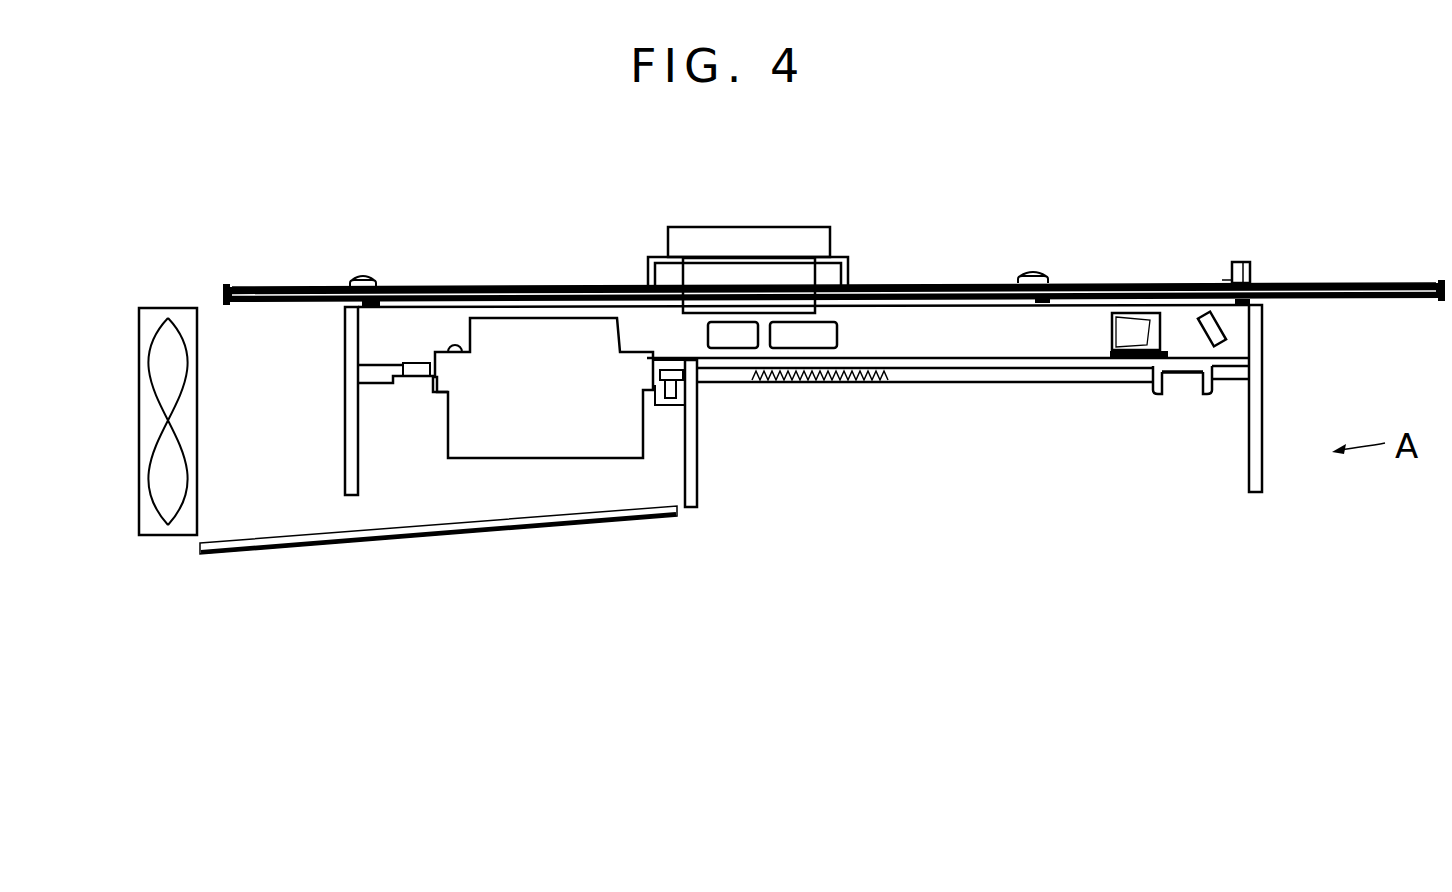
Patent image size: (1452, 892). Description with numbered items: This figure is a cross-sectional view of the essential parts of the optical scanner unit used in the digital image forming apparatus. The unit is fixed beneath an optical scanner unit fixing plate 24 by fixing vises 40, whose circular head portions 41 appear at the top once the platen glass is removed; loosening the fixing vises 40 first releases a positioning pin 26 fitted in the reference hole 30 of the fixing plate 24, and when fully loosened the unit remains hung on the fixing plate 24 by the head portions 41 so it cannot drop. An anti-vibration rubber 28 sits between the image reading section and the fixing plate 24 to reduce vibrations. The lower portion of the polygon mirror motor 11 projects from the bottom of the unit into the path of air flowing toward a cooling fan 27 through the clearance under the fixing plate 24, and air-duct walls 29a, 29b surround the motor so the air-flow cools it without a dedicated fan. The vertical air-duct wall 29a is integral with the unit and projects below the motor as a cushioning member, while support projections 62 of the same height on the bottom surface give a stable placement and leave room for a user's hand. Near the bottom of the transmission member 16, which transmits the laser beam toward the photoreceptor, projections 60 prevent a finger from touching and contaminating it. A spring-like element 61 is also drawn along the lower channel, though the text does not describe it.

The polygon mirror motor 11 is at (556, 459).
The transmission member 16 is at (1180, 352).
The optical scanner unit fixing plate 24 is at (1330, 298).
The positioning pin 26 is at (1243, 262).
The cooling fan 27 is at (170, 536).
The anti-vibration rubber 28 is at (540, 287).
The air-duct wall 29a is at (698, 431).
The air-duct wall 29b is at (423, 542).
The reference hole 30 is at (1225, 282).
The fixing vise 40 is at (366, 277).
The head portion 41 is at (352, 284).
The projection 60 is at (1205, 394).
The spring 61 is at (863, 382).
The support projection 62 is at (346, 375).